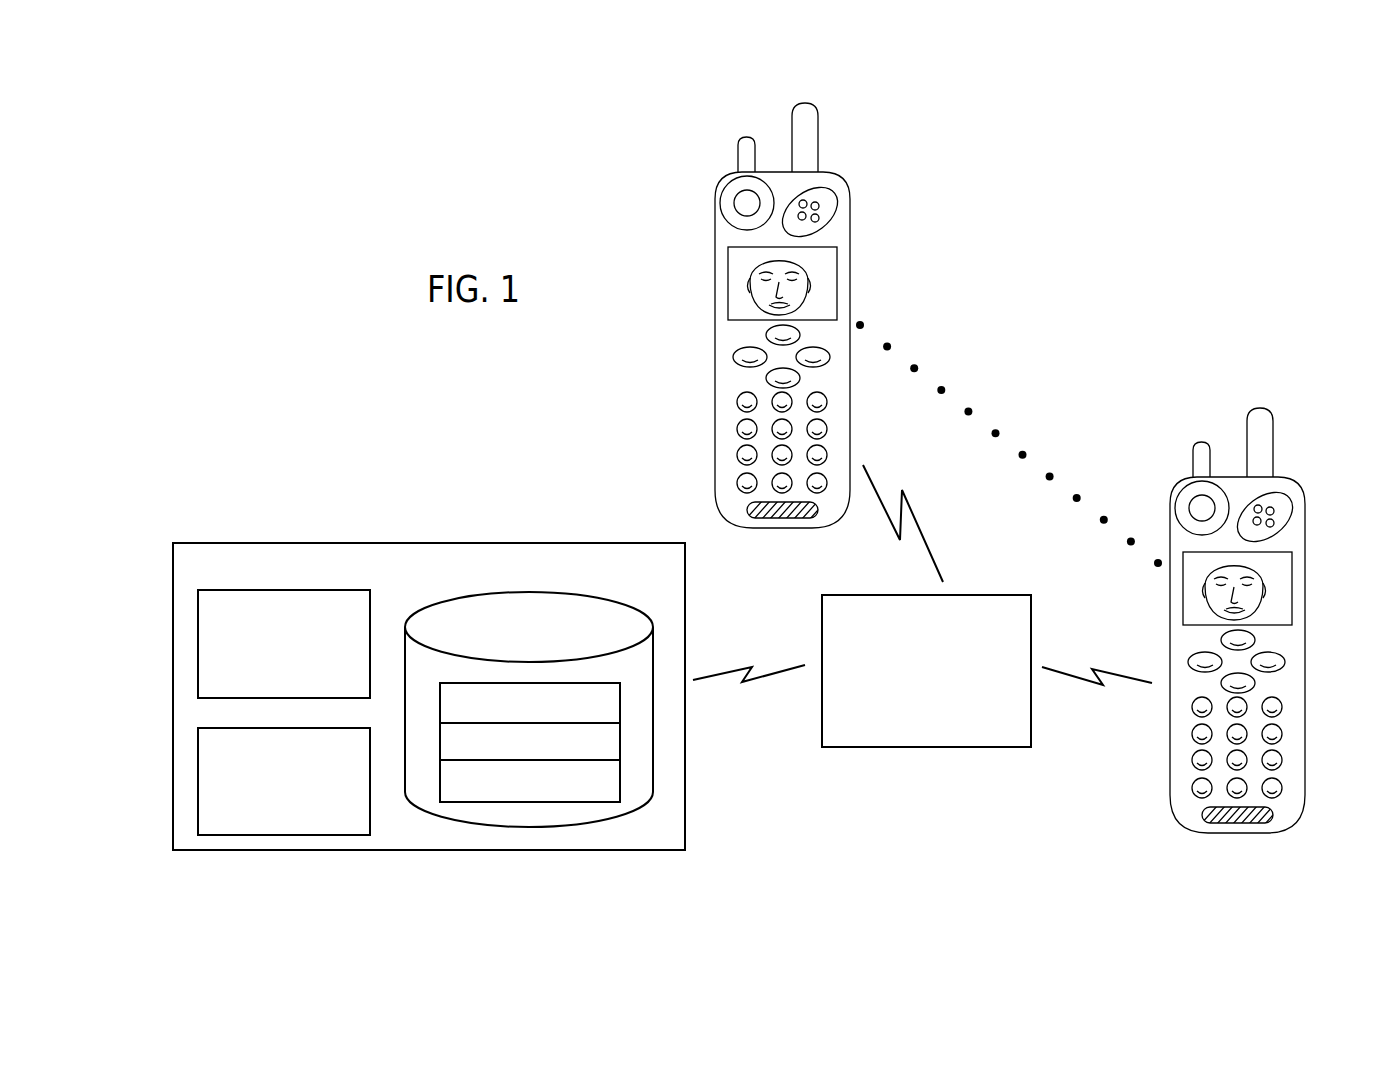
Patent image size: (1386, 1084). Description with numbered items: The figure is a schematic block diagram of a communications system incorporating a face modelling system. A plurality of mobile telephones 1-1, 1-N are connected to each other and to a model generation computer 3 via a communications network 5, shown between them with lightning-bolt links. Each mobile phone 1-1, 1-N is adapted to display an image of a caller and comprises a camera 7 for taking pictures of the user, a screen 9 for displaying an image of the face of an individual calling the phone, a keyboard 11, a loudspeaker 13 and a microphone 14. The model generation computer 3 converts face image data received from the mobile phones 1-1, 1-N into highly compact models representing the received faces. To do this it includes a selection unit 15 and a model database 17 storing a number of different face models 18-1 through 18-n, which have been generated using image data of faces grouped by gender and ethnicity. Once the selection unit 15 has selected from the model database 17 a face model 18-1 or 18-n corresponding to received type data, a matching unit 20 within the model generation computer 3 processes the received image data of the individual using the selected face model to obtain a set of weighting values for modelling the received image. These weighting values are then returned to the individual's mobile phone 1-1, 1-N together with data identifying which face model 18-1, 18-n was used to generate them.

The mobile telephone 1-1 is at (853, 283).
The mobile telephone 1-N is at (1303, 593).
The model generation computer 3 is at (562, 543).
The communications network 5 is at (990, 595).
The camera 7 is at (732, 197).
The screen 9 is at (737, 283).
The keyboard 11 is at (742, 428).
The loudspeaker 13 is at (833, 190).
The microphone 14 is at (795, 518).
The selection unit 15 is at (198, 636).
The model database 17 is at (653, 623).
The face model 18-1 is at (620, 705).
The face model 18-n is at (620, 773).
The matching unit 20 is at (198, 778).